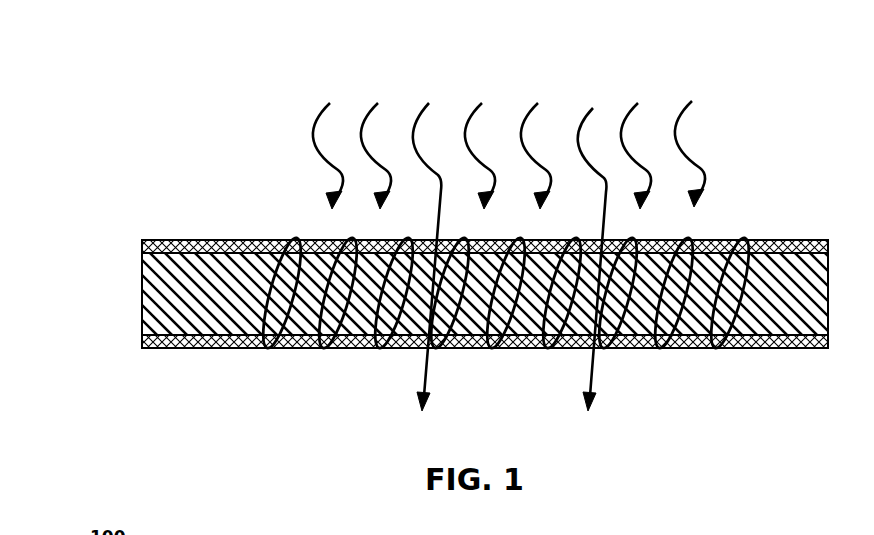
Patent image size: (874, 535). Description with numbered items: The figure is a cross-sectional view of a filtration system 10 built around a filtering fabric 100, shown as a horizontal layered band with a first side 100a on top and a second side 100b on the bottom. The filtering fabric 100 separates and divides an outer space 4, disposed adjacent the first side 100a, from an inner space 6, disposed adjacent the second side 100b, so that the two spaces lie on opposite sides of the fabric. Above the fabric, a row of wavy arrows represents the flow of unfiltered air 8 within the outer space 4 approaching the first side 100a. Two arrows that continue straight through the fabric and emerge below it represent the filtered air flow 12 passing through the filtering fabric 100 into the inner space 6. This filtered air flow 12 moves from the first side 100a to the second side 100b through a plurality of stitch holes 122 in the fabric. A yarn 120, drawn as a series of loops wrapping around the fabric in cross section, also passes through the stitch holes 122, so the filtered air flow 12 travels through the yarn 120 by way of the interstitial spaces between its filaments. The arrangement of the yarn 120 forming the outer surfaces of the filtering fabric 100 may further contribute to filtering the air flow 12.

The filtration system 10 is at (188, 78).
The outer space 4 is at (213, 185).
The inner space 6 is at (213, 409).
The unfiltered air flow 8 is at (313, 128).
The filtered air flow 12 is at (420, 367).
The filtering fabric 100 is at (127, 240).
The first side 100a is at (793, 238).
The second side 100b is at (808, 348).
The yarn 120 is at (731, 348).
The stitch holes 122 is at (448, 348).